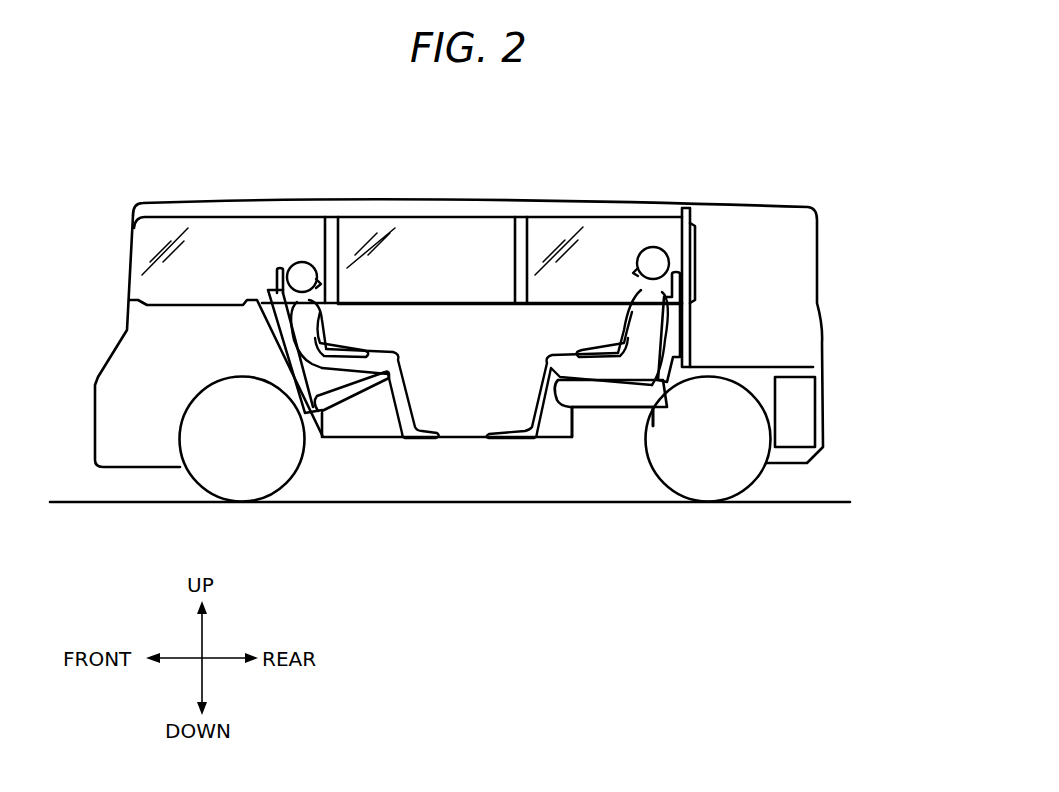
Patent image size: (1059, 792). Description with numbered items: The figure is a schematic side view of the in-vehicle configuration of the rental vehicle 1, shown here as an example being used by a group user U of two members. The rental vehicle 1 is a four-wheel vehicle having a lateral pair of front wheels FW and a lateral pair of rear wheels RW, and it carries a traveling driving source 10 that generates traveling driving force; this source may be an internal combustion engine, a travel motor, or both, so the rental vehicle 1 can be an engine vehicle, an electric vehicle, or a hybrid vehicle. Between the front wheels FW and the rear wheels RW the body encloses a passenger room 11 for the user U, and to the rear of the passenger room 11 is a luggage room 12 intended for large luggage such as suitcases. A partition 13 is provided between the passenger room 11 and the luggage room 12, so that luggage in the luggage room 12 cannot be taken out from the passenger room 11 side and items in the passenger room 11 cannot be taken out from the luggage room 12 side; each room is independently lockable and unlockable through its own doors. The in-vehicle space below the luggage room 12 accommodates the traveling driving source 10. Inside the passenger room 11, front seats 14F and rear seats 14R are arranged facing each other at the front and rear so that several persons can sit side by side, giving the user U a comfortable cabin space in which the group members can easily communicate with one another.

The rental vehicle 1 is at (674, 158).
The traveling driving source 10 is at (805, 400).
The passenger room 11 is at (438, 313).
The luggage room 12 is at (797, 263).
The partition 13 is at (687, 250).
The front seats 14F is at (355, 398).
The rear seats 14R is at (595, 397).
The front wheels FW is at (196, 481).
The rear wheels RW is at (655, 475).
The user U is at (546, 325).